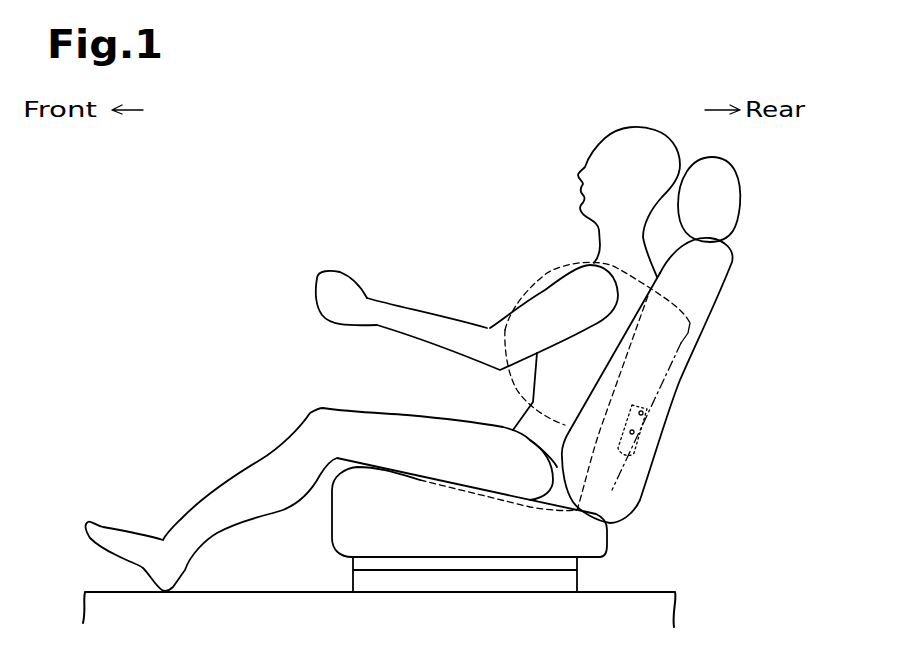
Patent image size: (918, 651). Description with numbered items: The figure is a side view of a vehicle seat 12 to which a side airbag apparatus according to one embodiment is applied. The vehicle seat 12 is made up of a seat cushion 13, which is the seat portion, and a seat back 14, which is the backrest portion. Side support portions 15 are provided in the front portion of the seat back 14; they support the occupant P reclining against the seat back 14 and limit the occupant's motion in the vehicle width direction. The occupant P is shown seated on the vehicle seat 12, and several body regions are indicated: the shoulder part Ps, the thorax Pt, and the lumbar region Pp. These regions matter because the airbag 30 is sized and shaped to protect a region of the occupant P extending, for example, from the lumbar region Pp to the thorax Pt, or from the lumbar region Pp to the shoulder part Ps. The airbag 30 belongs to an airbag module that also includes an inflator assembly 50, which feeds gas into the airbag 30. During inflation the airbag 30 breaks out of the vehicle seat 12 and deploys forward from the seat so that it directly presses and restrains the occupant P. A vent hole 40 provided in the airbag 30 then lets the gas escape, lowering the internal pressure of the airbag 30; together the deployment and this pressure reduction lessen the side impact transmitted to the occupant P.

The vehicle seat 12 is at (536, 374).
The seat cushion 13 is at (606, 538).
The seat back 14 is at (623, 498).
The side support portions 15 is at (613, 372).
The airbag 30 is at (516, 300).
The vent hole 40 is at (681, 344).
The inflator assembly 50 is at (565, 425).
The occupant P is at (663, 131).
The shoulder part Ps is at (591, 258).
The thorax Pt is at (537, 362).
The lumbar region Pp is at (580, 472).